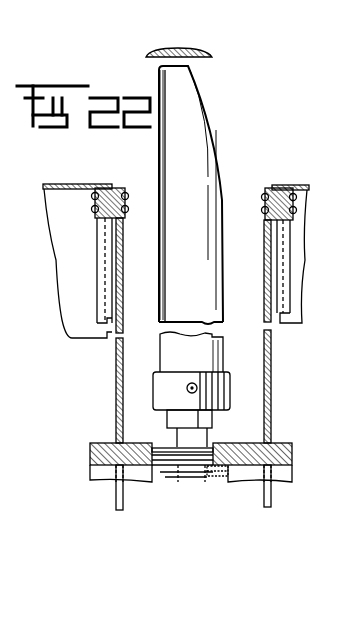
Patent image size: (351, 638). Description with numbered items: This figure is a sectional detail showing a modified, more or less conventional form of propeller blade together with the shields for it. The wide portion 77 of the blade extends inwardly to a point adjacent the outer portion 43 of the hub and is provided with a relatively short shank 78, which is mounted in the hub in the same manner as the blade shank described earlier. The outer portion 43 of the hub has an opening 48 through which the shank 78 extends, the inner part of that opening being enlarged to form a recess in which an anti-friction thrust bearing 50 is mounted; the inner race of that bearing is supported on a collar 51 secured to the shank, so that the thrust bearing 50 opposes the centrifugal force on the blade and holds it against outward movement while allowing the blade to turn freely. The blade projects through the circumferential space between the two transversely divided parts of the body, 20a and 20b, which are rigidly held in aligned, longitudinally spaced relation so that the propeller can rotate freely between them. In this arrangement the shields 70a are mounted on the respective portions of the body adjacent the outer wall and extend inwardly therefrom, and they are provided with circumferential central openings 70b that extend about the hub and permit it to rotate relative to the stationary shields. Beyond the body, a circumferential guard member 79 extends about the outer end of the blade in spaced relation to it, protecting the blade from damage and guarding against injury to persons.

The circumferential guard member 79 is at (212, 53).
The wide portion of the blade 77 is at (207, 162).
The body part 20a is at (87, 186).
The body part 20b is at (300, 184).
The shields 70a is at (115, 407).
The circumferential central openings 70b is at (270, 445).
The opening 48 is at (172, 445).
The outer portion of the hub 43 is at (294, 452).
The anti-friction thrust bearing 50 is at (175, 467).
The collar 51 is at (187, 473).
The shank 78 is at (202, 480).